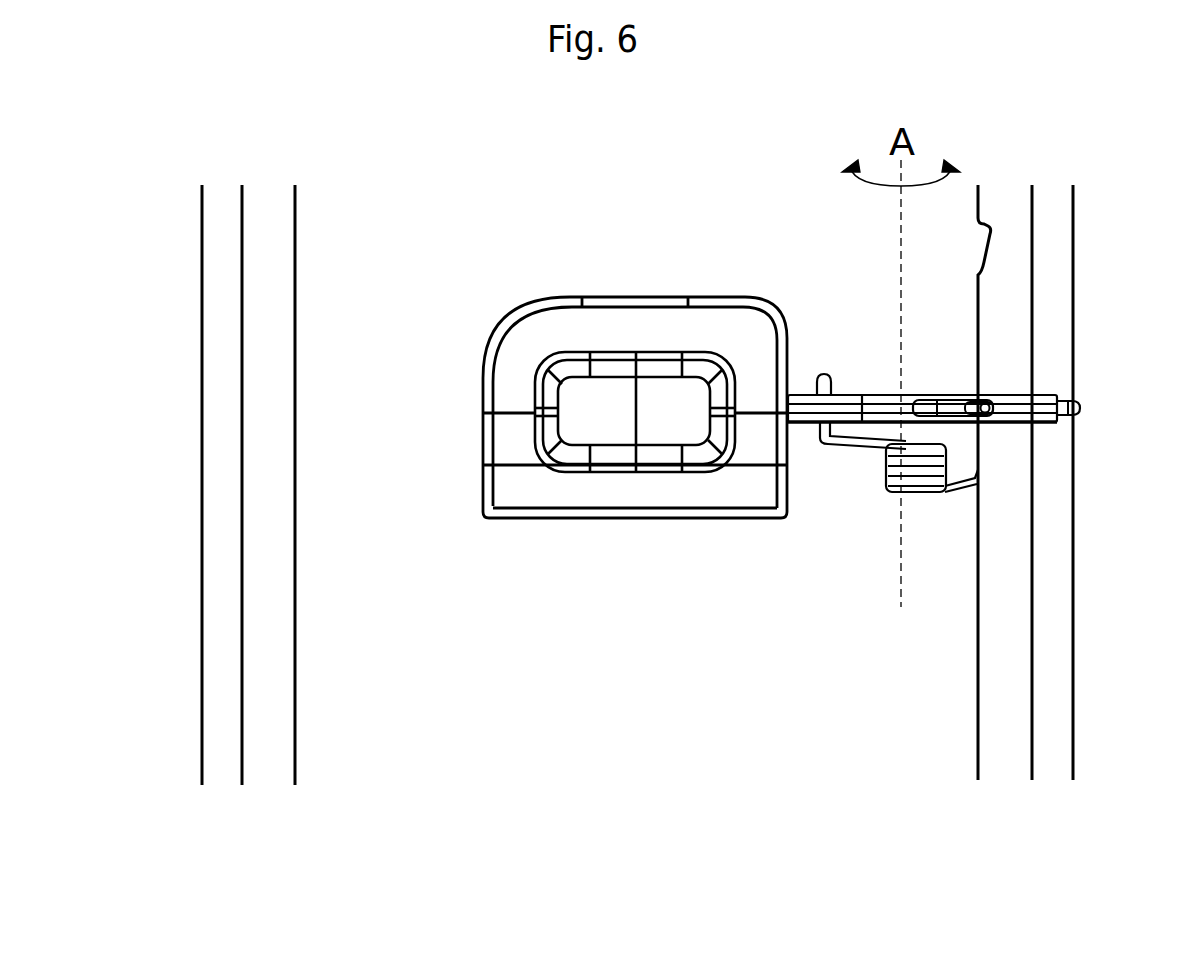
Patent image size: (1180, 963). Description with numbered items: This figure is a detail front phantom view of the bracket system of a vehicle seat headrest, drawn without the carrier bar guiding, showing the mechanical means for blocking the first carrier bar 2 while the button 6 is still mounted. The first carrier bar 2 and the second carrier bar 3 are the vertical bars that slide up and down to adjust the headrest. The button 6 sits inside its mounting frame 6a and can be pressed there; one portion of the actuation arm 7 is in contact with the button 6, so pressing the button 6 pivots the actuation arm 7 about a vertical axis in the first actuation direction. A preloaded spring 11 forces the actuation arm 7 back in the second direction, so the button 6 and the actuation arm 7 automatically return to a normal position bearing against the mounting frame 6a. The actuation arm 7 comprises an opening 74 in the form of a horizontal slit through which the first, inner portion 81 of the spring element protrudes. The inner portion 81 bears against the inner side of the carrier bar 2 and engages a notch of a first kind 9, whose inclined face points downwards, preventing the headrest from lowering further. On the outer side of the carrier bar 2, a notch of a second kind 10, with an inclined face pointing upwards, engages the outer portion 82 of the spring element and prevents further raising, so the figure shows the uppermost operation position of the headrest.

The first carrier bar 2 is at (1010, 737).
The second carrier bar 3 is at (258, 718).
The button 6 is at (603, 423).
The mounting frame 6a is at (585, 323).
The actuation arm 7 is at (842, 414).
The notch of a first kind 9 is at (977, 235).
The notch of a second kind 10 is at (1068, 392).
The preloaded spring 11 is at (905, 490).
The opening 74 is at (943, 395).
The first portion of the spring element 81 is at (985, 422).
The outer portion of the spring element 82 is at (1050, 425).